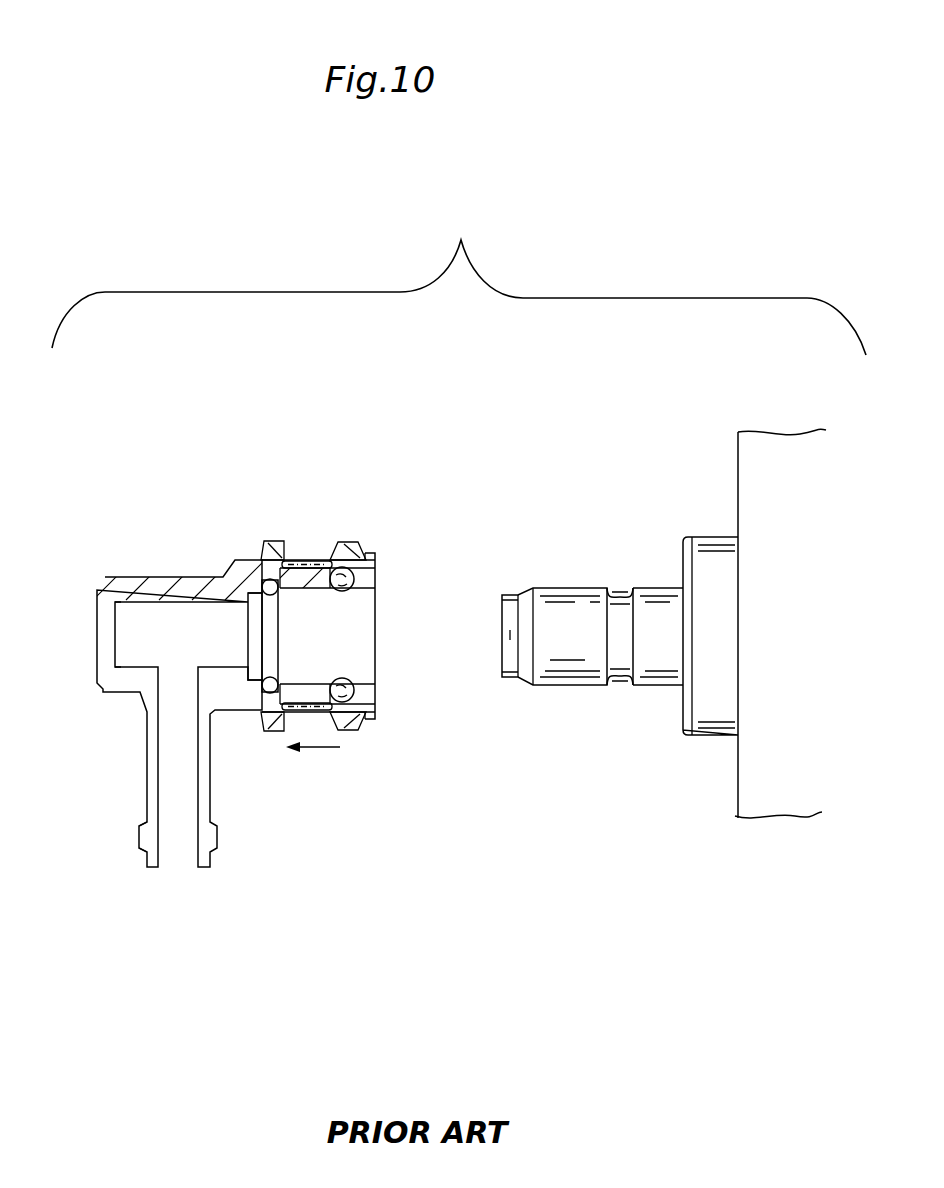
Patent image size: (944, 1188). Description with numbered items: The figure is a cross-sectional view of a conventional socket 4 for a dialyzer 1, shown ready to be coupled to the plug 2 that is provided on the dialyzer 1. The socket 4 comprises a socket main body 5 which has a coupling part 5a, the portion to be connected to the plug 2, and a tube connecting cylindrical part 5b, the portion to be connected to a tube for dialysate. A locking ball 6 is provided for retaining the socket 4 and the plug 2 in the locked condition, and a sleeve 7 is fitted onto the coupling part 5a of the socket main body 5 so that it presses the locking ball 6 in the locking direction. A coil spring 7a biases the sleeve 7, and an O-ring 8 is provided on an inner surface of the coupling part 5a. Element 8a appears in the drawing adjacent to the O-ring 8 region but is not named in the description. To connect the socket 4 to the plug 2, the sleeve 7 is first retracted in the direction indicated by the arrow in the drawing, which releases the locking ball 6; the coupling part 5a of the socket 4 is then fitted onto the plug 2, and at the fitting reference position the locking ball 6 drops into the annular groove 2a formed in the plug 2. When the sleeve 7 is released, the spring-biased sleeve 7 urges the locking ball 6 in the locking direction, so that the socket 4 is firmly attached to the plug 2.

The dialyzer 1 is at (803, 657).
The plug 2 is at (569, 680).
The annular groove 2a is at (616, 682).
The socket 4 is at (250, 770).
The socket main body 5 is at (160, 577).
The coupling part 5a is at (358, 630).
The tube connecting cylindrical part 5b is at (147, 778).
The locking ball 6 is at (355, 590).
The sleeve 7 is at (352, 540).
The coil spring 7a is at (312, 557).
The O-ring 8 is at (272, 680).
The bush 8a is at (262, 571).